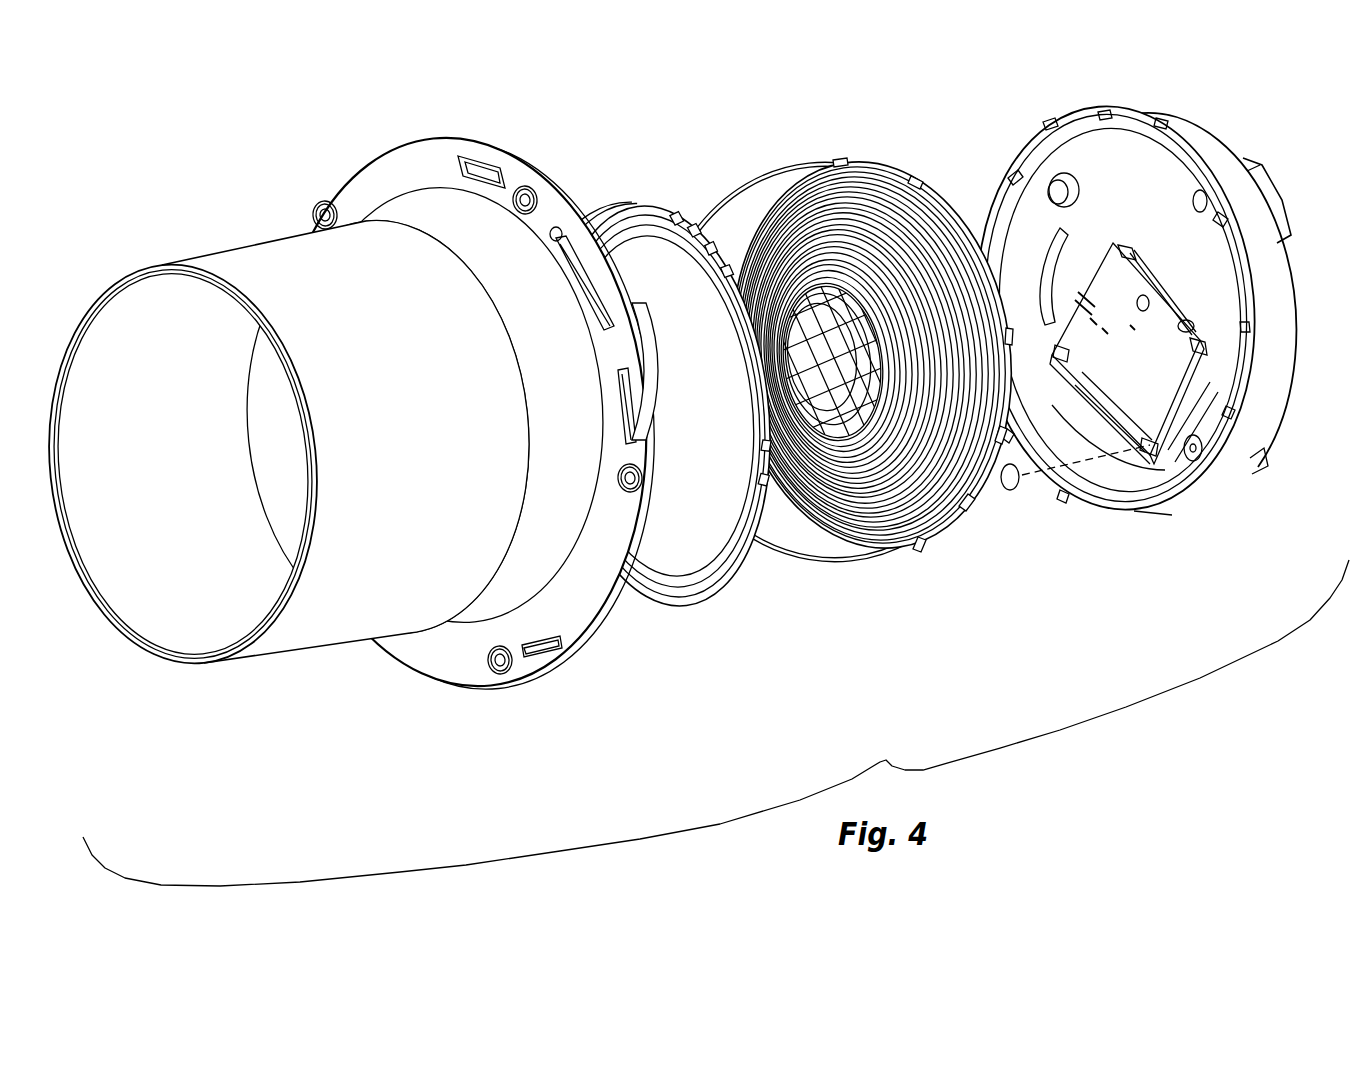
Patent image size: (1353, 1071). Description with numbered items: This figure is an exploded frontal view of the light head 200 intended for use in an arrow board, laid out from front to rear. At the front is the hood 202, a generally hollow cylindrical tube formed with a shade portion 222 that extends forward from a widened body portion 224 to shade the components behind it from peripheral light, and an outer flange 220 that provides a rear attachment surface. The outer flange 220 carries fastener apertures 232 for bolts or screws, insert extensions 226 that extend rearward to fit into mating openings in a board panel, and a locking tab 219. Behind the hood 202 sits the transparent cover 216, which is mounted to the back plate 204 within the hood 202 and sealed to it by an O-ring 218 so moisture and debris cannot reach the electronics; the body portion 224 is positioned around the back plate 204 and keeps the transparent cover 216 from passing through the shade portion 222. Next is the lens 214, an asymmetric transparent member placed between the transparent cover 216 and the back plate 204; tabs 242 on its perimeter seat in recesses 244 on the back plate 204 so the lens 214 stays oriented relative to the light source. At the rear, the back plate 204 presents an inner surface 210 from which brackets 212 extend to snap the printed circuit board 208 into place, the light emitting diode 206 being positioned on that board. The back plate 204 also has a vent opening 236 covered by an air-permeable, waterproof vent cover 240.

The light head 200 is at (212, 111).
The hood 202 is at (289, 475).
The back plate 204 is at (1154, 320).
The light emitting diode (LED) 206 is at (1143, 303).
The printed circuit board (PCB) 208 is at (1230, 390).
The inner surface 210 is at (1130, 153).
The brackets 212 is at (1118, 247).
The lens 214 is at (873, 367).
The transparent cover 216 is at (680, 575).
The O-ring 218 is at (832, 565).
The locking tab 219 is at (603, 222).
The outer flange 220 is at (477, 429).
The shade portion 222 is at (352, 622).
The body portion 224 is at (487, 612).
The insert extensions 226 is at (651, 361).
The fastener apertures 232 is at (330, 212).
The vent opening 236 is at (1193, 452).
The vent cover 240 is at (1012, 488).
The tabs 242 is at (880, 158).
The recesses 244 is at (1047, 128).